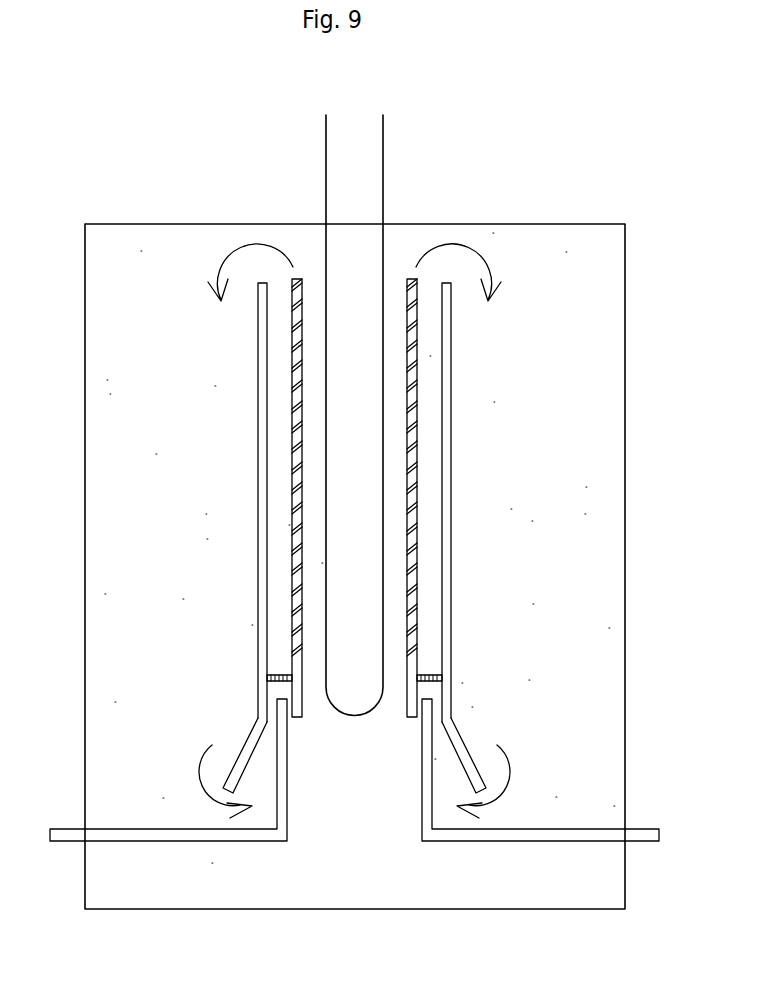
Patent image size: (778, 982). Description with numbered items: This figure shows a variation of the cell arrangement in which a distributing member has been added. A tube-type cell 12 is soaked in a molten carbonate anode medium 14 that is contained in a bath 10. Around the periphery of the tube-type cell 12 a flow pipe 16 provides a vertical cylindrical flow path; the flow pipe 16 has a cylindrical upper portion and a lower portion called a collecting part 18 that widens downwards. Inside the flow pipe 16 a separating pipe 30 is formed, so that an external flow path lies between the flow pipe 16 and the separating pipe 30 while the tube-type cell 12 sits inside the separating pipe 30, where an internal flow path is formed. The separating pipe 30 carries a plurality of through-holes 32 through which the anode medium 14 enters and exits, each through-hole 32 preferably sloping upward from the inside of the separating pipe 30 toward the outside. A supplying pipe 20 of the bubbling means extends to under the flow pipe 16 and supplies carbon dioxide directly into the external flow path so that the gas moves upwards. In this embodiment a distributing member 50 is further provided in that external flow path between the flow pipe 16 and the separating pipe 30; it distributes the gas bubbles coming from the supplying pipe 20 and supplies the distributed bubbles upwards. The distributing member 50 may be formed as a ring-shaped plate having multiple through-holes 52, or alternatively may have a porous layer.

The bath 10 is at (137, 223).
The tube-type cell 12 is at (326, 135).
The anode medium 14 is at (185, 253).
The flow pipe 16 is at (262, 514).
The collecting part 18 is at (240, 762).
The supplying pipe 20 is at (241, 841).
The separating pipe 30 is at (293, 428).
The through-holes 32 is at (293, 455).
The distributing member 50 is at (275, 678).
The through-holes 52 is at (268, 686).